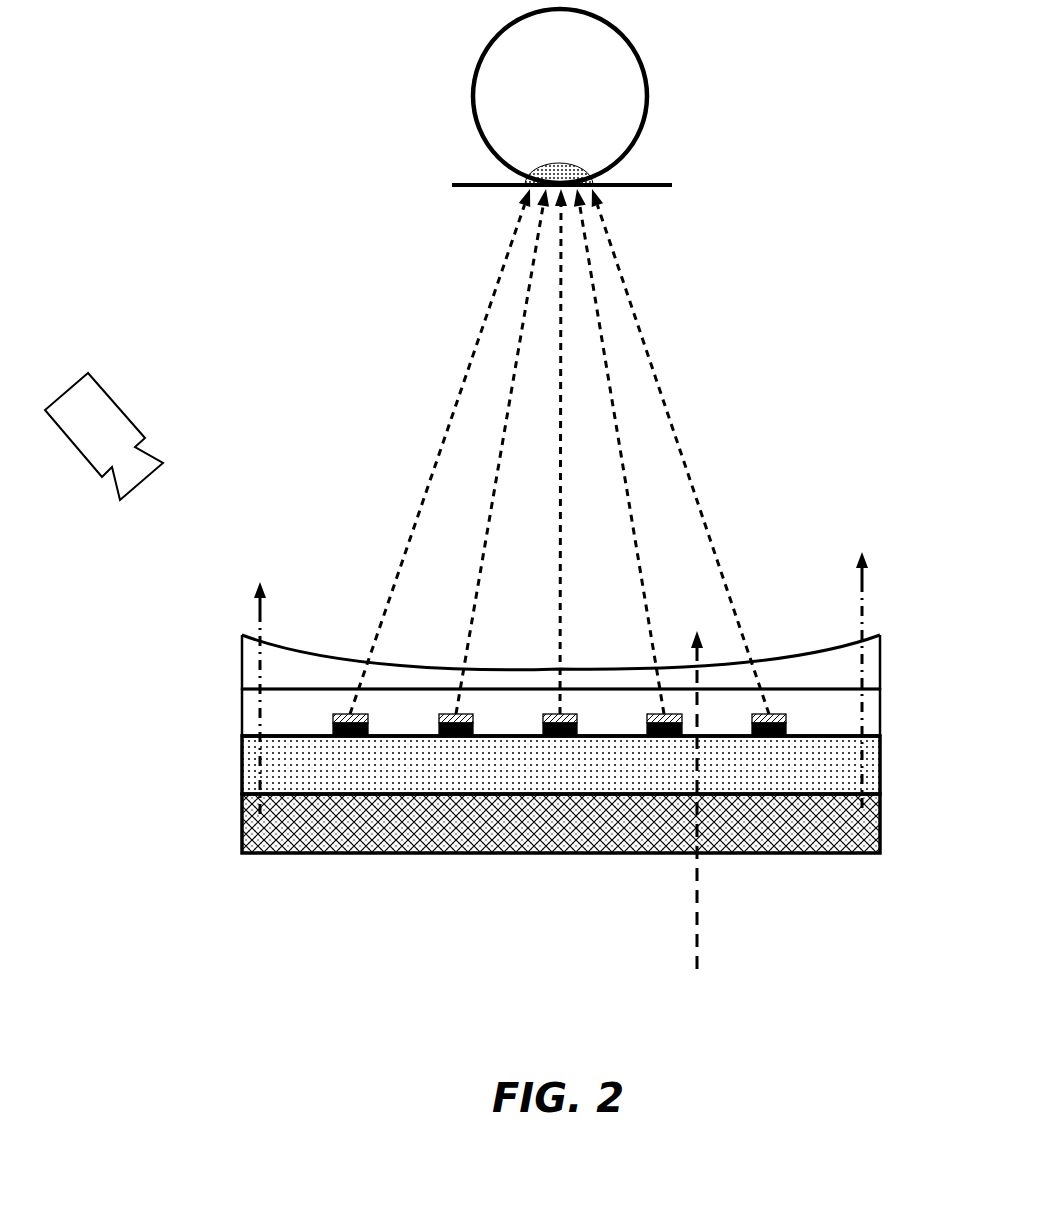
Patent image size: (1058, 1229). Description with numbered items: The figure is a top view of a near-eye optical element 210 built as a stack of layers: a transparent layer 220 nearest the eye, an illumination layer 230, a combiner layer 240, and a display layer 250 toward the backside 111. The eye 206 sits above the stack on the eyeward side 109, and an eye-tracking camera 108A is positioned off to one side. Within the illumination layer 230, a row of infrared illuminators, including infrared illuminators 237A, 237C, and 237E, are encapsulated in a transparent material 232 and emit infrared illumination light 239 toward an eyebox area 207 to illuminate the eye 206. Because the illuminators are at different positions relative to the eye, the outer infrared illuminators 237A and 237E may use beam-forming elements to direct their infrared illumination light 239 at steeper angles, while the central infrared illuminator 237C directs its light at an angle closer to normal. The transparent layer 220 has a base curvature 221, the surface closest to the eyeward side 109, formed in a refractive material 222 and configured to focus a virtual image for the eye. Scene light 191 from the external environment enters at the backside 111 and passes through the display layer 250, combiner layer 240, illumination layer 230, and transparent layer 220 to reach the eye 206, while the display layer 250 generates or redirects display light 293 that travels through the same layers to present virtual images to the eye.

The eye 206 is at (642, 65).
The eyebox area 207 is at (672, 185).
The infrared illumination light 239 is at (460, 398).
The eye-tracking camera 108A is at (103, 398).
The eyeward side 109 is at (787, 500).
The display light 293 is at (575, 657).
The scene light 191 is at (695, 834).
The backside 111 is at (386, 902).
The near-eye optical element 210 is at (566, 720).
The transparent layer 220 is at (601, 638).
The base curvature 221 is at (840, 652).
The refractive material 222 is at (561, 674).
The illumination layer 230 is at (885, 689).
The transparent material 232 is at (561, 718).
The infrared illuminator 237A is at (370, 728).
The infrared illuminator 237C is at (576, 714).
The infrared illuminator 237E is at (788, 728).
The combiner layer 240 is at (885, 736).
The display layer 250 is at (885, 794).